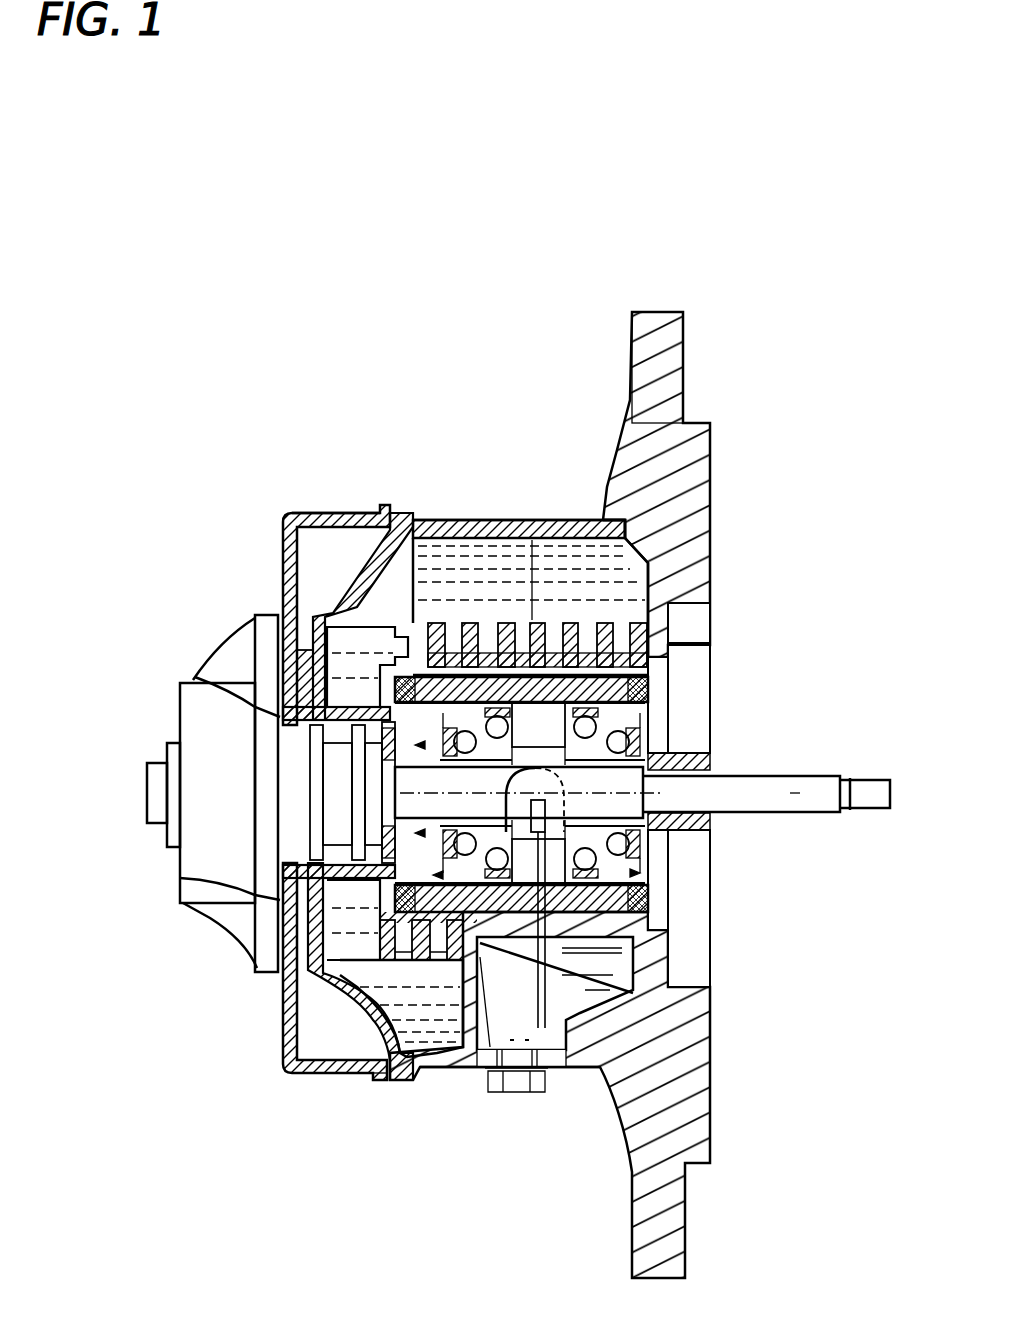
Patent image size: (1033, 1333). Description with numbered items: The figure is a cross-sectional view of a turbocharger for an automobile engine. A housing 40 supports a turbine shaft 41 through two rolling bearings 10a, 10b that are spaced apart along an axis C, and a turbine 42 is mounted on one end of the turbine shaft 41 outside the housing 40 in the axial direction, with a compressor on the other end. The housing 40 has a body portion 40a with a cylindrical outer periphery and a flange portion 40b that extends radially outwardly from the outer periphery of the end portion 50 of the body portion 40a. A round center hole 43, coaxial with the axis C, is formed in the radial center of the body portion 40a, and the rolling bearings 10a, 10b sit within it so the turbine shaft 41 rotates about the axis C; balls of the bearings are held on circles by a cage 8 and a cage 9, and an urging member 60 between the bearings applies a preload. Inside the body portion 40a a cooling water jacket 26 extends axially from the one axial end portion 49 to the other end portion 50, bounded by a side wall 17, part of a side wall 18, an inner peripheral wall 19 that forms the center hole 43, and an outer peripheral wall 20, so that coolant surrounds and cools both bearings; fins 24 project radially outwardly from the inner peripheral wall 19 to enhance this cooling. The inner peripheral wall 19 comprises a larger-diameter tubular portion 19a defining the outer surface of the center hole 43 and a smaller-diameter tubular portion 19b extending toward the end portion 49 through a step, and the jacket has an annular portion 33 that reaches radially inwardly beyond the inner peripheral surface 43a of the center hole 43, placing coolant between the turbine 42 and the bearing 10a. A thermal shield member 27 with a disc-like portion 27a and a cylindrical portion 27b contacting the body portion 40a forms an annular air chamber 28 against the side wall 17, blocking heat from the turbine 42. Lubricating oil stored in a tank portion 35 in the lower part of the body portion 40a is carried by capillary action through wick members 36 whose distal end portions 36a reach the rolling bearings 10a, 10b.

The cage 8 is at (645, 862).
The cage 9 is at (648, 913).
The rolling bearing 10a is at (323, 972).
The rolling bearing 10b is at (622, 910).
The side wall 17 is at (405, 535).
The side wall 18 is at (668, 653).
The inner peripheral wall 19 is at (385, 610).
The larger-diameter tubular portion 19a is at (363, 615).
The smaller-diameter tubular portion 19b is at (308, 748).
The outer peripheral wall 20 is at (565, 520).
The fins 24 is at (607, 623).
The cooling water jacket 26 is at (430, 522).
The thermal shield member 27 is at (290, 1065).
The disc-like portion 27a is at (180, 878).
The cylindrical portion 27b is at (340, 1080).
The annular air chamber 28 is at (323, 1020).
The annular portion 33 is at (195, 676).
The tank portion 35 is at (497, 1072).
The wick members 36 is at (633, 993).
The distal end portions 36a is at (580, 838).
The housing 40 is at (710, 492).
The body portion 40a is at (500, 520).
The flange portion 40b is at (683, 362).
The turbine shaft 41 is at (838, 815).
The turbine 42 is at (207, 922).
The center hole 43 is at (648, 718).
The inner peripheral surface 43a is at (482, 1070).
The one axial end portion 49 is at (255, 652).
The end portion 50 is at (660, 628).
The urging member 60 is at (532, 520).
The axis C is at (815, 778).